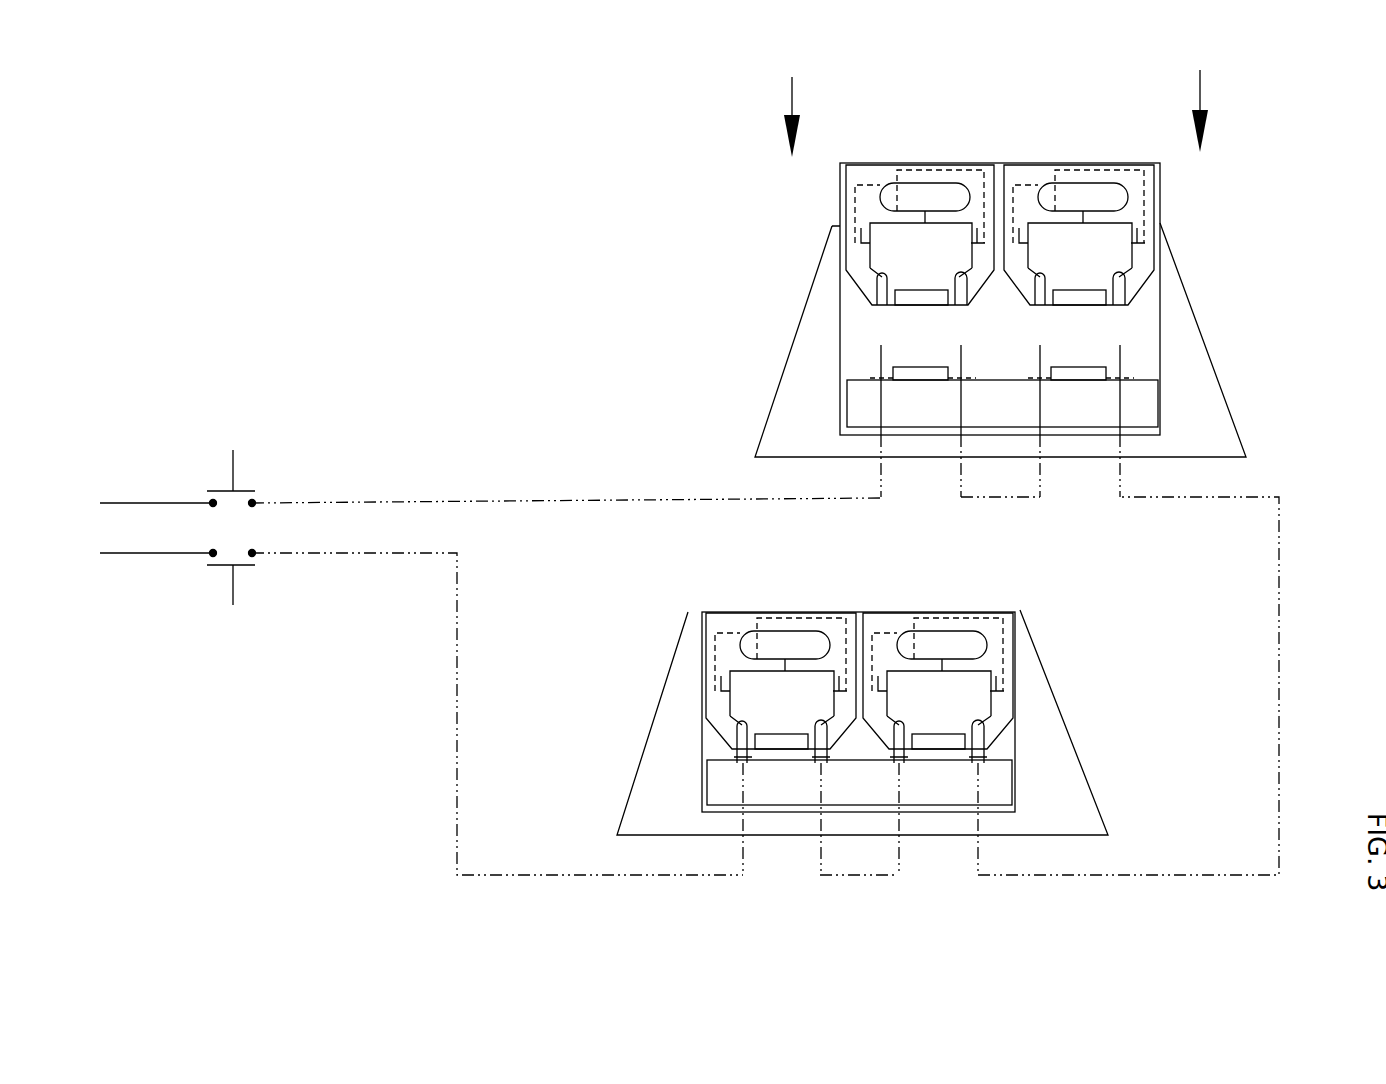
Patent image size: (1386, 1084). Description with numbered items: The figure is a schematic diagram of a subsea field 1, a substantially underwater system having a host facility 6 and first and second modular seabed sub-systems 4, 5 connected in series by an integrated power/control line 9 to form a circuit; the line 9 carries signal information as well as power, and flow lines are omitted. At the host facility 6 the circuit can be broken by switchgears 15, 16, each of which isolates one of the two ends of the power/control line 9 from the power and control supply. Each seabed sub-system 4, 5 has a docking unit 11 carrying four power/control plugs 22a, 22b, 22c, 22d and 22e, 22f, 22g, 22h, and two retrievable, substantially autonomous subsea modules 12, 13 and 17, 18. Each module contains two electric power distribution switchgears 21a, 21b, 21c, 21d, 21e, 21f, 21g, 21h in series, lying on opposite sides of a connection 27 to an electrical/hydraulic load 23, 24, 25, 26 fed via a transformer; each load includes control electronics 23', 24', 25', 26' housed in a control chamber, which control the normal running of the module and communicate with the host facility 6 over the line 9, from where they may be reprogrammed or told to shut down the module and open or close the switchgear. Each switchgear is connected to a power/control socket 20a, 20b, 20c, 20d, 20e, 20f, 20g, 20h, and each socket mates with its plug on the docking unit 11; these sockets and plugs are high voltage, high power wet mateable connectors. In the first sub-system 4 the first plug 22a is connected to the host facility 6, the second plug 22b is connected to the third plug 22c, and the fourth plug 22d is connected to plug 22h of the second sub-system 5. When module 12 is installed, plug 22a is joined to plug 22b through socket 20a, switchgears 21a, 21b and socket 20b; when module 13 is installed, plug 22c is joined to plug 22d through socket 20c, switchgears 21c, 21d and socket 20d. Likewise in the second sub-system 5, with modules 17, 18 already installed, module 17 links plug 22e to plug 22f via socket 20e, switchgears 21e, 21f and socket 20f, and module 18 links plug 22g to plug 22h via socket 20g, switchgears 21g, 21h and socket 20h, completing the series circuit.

The field 1 is at (736, 486).
The first modular seabed sub-system 4 is at (1318, 375).
The second modular seabed sub-system 5 is at (1180, 736).
The host facility 6 is at (137, 740).
The integrated power/control line 9 is at (565, 493).
The docking unit 11 is at (842, 402).
The retrievable subsea module 12 is at (824, 180).
The retrievable subsea module 13 is at (1148, 179).
The switchgear 15 is at (237, 449).
The switchgear 16 is at (237, 608).
The retrievable subsea module 17 is at (679, 635).
The retrievable subsea module 18 is at (979, 636).
The power/control socket 20a is at (873, 288).
The power/control socket 20b is at (952, 287).
The power/control socket 20c is at (1047, 289).
The power/control socket 20d is at (1127, 288).
The power/control socket 20e is at (734, 736).
The power/control socket 20f is at (810, 735).
The power/control socket 20g is at (908, 735).
The power/control socket 20h is at (985, 733).
The electric power distribution switchgear 21a is at (853, 237).
The electric power distribution switchgear 21b is at (986, 236).
The electric power distribution switchgear 21c is at (1014, 237).
The electric power distribution switchgear 21d is at (1144, 237).
The electric power distribution switchgear 21e is at (722, 683).
The electric power distribution switchgear 21f is at (872, 682).
The electric power distribution switchgear 21g is at (843, 682).
The electric power distribution switchgear 21h is at (1005, 684).
The power/control plug 22a is at (875, 355).
The power/control plug 22b is at (957, 353).
The power/control plug 22c is at (1045, 353).
The power/control plug 22d is at (1125, 353).
The power/control plug 22e is at (748, 765).
The power/control plug 22f is at (827, 767).
The power/control plug 22g is at (903, 765).
The power/control plug 22h is at (983, 765).
The electrical/hydraulic load 23 is at (915, 148).
The control electronics 23' is at (847, 180).
The electrical/hydraulic load 24 is at (1091, 160).
The control electronics 24' is at (1078, 162).
The electrical/hydraulic load 25 is at (726, 583).
The control electronics 25' is at (676, 620).
The electrical/hydraulic load 26 is at (940, 600).
The control electronics 26' is at (929, 600).
The connection 27 is at (923, 227).